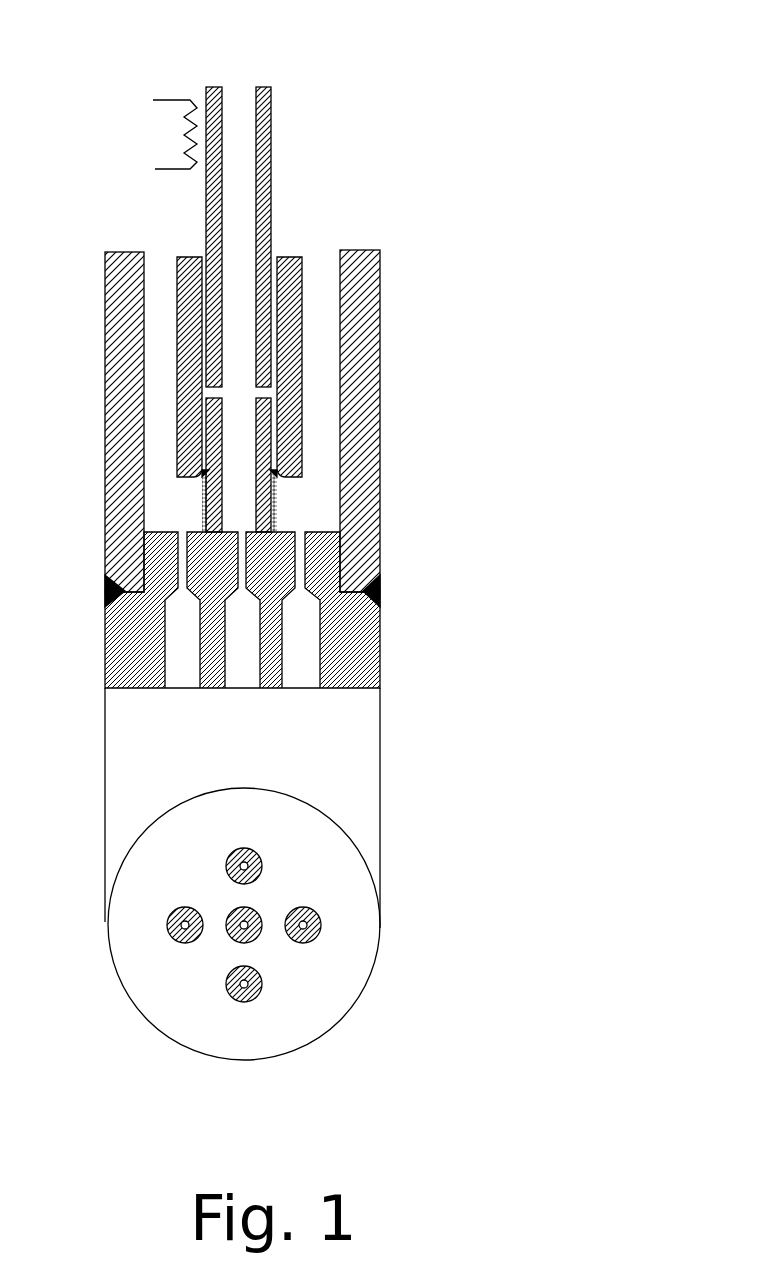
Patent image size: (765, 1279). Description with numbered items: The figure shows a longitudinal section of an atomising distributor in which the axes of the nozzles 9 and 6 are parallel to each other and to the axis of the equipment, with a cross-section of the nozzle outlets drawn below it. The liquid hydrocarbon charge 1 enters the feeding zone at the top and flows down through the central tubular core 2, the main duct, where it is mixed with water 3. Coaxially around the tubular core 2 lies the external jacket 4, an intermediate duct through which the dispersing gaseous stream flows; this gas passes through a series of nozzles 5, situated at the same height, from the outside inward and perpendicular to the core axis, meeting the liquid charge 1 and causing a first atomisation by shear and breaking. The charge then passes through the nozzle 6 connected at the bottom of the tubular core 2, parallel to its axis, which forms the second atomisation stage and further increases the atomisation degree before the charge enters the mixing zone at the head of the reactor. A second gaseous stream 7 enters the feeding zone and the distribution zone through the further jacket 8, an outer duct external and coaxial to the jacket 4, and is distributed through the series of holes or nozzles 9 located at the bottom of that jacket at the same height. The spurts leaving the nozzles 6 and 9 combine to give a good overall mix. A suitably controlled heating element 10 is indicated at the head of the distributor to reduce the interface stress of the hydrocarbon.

The liquid hydrocarbon charge 1 is at (242, 57).
The tubular core 2 is at (239, 310).
The water 3 is at (239, 127).
The external jacket 4 is at (218, 309).
The nozzles 5 is at (270, 390).
The nozzle 6 is at (242, 644).
The second gaseous stream 7 is at (213, 355).
The further jacket 8 is at (242, 421).
The nozzles 9 is at (242, 610).
The heating element 10 is at (165, 135).